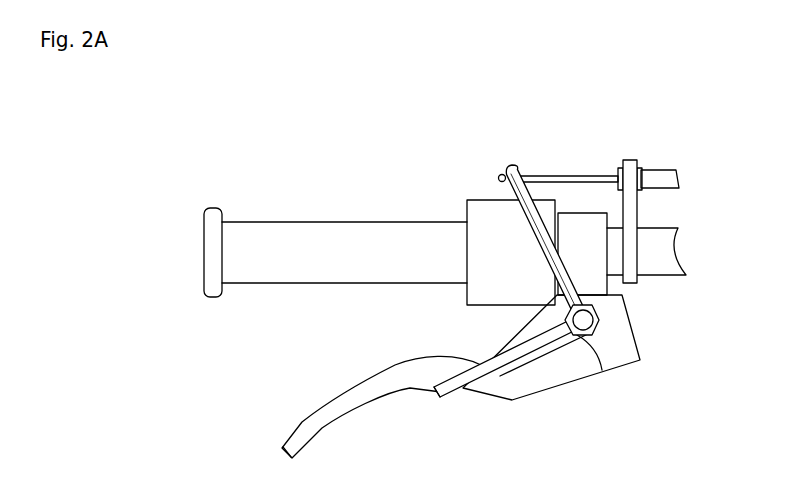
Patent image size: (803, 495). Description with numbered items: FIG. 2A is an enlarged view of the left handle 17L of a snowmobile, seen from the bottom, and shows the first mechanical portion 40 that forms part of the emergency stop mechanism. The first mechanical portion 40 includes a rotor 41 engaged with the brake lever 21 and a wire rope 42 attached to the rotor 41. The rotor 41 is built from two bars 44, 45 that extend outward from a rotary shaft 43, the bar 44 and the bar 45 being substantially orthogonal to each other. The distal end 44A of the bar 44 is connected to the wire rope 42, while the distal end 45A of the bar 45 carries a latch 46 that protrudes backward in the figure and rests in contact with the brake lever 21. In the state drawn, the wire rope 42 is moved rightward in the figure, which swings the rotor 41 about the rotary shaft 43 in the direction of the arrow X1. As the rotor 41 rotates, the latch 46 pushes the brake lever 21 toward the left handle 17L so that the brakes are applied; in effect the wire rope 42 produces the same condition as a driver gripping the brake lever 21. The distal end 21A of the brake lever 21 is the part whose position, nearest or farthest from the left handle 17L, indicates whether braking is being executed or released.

The left handle 17L is at (342, 245).
The brake lever 21 is at (347, 400).
The distal end of brake lever 21A is at (287, 442).
The first mechanical portion 40 is at (657, 150).
The rotor 41 is at (606, 310).
The wire rope 42 is at (592, 176).
The rotary shaft 43 is at (586, 320).
The bar 44 is at (527, 205).
The distal end of bar 44A is at (508, 168).
The bar 45 is at (484, 374).
The distal end of bar 45A is at (432, 392).
The latch 46 is at (449, 394).
The direction of rotation of rotor X1 is at (557, 122).